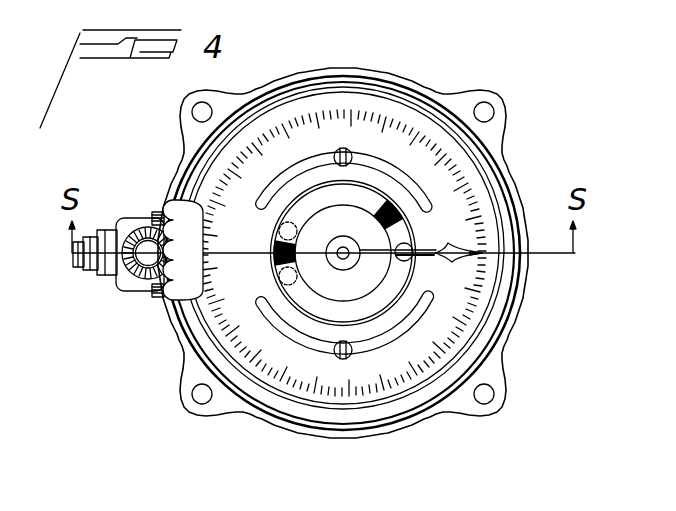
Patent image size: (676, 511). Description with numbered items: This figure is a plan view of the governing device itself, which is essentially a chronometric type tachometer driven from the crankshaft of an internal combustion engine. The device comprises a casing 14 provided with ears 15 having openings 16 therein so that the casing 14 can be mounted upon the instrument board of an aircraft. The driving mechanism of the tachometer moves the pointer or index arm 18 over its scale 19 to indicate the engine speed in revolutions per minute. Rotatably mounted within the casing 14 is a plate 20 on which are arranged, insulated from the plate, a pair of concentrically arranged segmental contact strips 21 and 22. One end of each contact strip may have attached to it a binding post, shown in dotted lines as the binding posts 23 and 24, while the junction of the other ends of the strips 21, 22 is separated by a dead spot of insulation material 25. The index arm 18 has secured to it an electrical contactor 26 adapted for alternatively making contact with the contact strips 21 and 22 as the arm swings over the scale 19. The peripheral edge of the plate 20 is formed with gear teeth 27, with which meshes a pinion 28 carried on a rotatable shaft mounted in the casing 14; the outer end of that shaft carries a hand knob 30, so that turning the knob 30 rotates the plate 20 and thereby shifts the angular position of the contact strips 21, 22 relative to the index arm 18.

The casing 14 is at (527, 290).
The ears 15 is at (509, 102).
The openings 16 is at (488, 106).
The pointer or index arm 18 is at (460, 243).
The scale 19 is at (477, 188).
The plate 20 is at (198, 292).
The segmental contact strip 21 is at (354, 200).
The segmental contact strip 22 is at (333, 310).
The binding post 23 is at (280, 226).
The binding post 24 is at (280, 281).
The dead spot of insulation material 25 is at (358, 243).
The electrical contactor 26 is at (410, 258).
The gear teeth 27 is at (177, 220).
The pinion 28 is at (148, 288).
The hand knob 30 is at (134, 238).